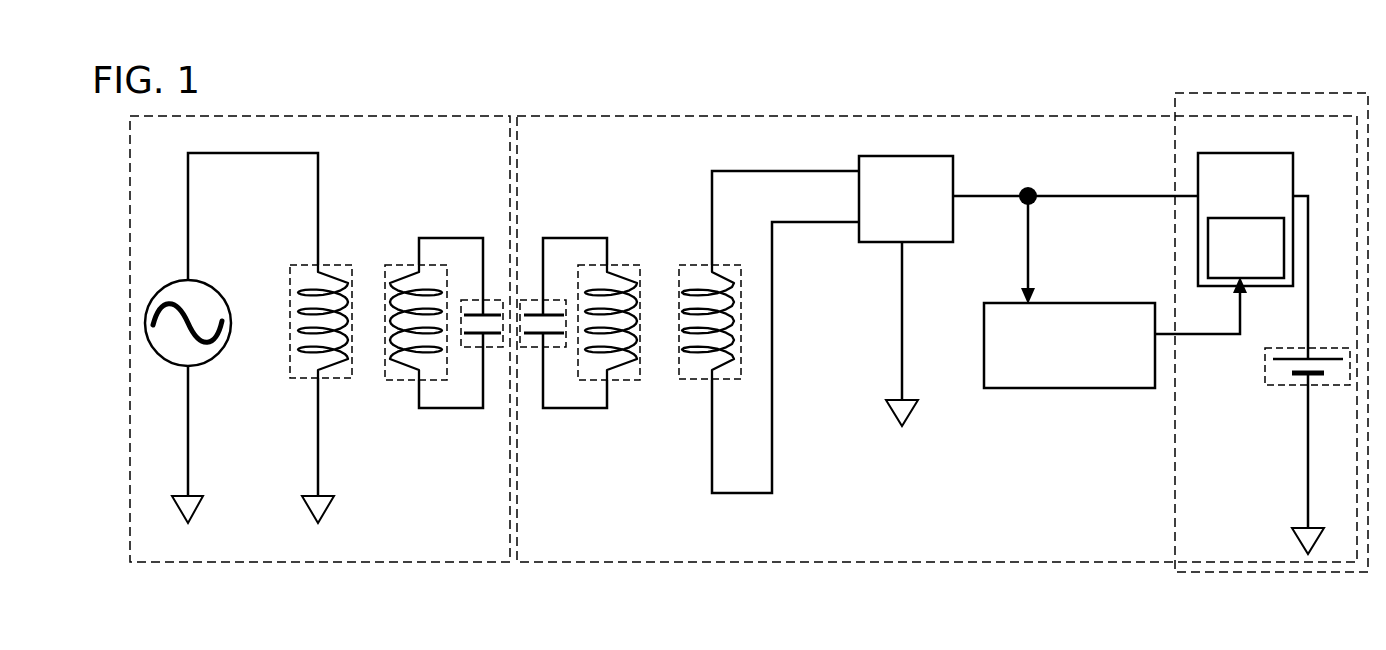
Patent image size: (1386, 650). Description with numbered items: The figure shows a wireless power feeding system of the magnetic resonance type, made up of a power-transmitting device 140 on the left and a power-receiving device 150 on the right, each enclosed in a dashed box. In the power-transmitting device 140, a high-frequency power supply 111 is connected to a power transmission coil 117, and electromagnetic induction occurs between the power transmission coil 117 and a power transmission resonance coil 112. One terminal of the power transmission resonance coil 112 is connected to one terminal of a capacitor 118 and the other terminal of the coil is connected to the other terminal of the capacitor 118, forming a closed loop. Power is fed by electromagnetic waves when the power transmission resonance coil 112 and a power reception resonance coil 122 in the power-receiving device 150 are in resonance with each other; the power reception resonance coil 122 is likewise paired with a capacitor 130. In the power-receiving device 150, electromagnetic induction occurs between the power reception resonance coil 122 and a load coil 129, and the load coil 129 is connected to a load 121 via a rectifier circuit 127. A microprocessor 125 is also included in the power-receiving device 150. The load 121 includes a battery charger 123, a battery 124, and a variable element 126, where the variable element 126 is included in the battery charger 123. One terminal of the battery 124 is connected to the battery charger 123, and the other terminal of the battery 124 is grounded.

The high-frequency power supply 111 is at (177, 282).
The power transmission coil 117 is at (326, 265).
The power transmission resonance coil 112 is at (410, 265).
The capacitor 118 is at (472, 348).
The capacitor 130 is at (555, 348).
The power reception resonance coil 122 is at (618, 265).
The load coil 129 is at (705, 265).
The rectifier circuit 127 is at (906, 199).
The microprocessor 125 is at (1069, 345).
The battery charger 123 is at (1245, 219).
The variable element 126 is at (1246, 248).
The battery 124 is at (1285, 388).
The load 121 is at (1245, 93).
The power-transmitting device 140 is at (177, 557).
The power-receiving device 150 is at (564, 557).